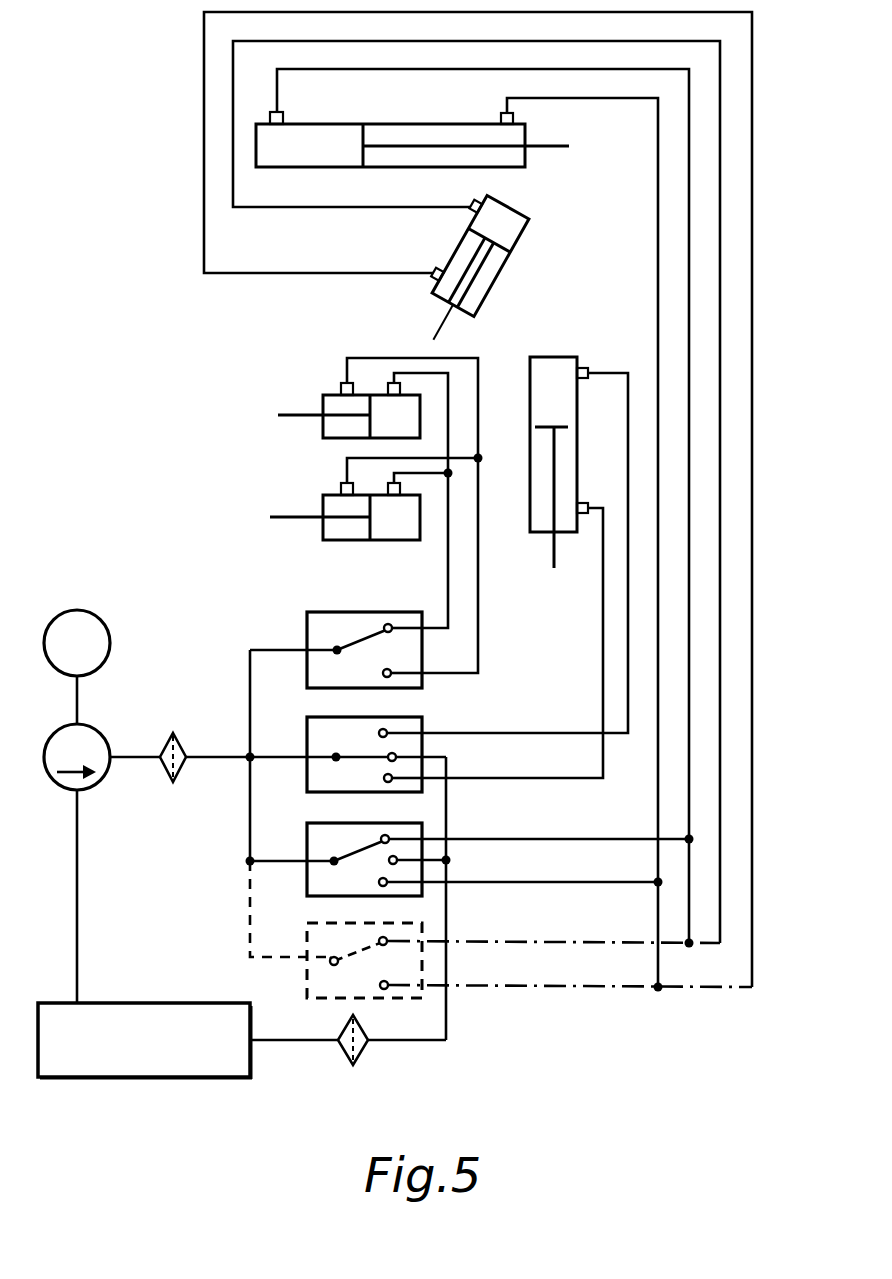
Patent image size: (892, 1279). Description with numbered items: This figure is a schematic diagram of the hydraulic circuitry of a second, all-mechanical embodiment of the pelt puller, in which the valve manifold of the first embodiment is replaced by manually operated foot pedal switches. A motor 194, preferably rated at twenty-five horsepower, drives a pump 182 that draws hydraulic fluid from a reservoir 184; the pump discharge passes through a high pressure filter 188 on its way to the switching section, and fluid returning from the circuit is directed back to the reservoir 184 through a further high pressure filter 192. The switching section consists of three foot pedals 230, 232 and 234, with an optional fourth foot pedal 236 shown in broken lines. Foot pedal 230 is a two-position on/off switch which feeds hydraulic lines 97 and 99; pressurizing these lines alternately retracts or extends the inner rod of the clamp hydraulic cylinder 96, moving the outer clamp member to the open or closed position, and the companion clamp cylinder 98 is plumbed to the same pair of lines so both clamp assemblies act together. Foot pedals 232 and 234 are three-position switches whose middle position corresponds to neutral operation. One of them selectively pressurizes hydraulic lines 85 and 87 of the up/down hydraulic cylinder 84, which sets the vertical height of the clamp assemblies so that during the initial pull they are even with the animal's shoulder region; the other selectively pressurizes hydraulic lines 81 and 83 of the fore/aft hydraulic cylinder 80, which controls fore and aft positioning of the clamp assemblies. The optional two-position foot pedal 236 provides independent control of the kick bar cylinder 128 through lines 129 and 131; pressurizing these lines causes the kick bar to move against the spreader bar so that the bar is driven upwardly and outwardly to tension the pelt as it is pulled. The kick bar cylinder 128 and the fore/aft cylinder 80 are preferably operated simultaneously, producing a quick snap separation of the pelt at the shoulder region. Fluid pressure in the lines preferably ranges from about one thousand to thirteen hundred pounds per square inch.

The fore/aft hydraulic cylinder 80 is at (347, 122).
The kick bar hydraulic cylinder 128 is at (488, 292).
The up/down hydraulic cylinder 84 is at (529, 377).
The hydraulic cylinder 98 is at (342, 440).
The hydraulic cylinder 96 is at (338, 541).
The hydraulic line 99 is at (433, 624).
The hydraulic line 97 is at (448, 671).
The foot pedal 230 is at (373, 608).
The foot pedal 232 is at (303, 727).
The foot pedal 234 is at (303, 835).
The fourth two-position foot pedal 236 is at (305, 948).
The hydraulic line 85 is at (515, 732).
The hydraulic line 87 is at (511, 777).
The hydraulic line 81 is at (505, 836).
The hydraulic line 83 is at (508, 881).
The hydraulic line 129 is at (720, 943).
The hydraulic line 131 is at (752, 987).
The motor 194 is at (111, 643).
The pump 182 is at (100, 729).
The high pressure filter 188 is at (205, 743).
The reservoir 184 is at (153, 1002).
The high pressure filter 192 is at (365, 1056).